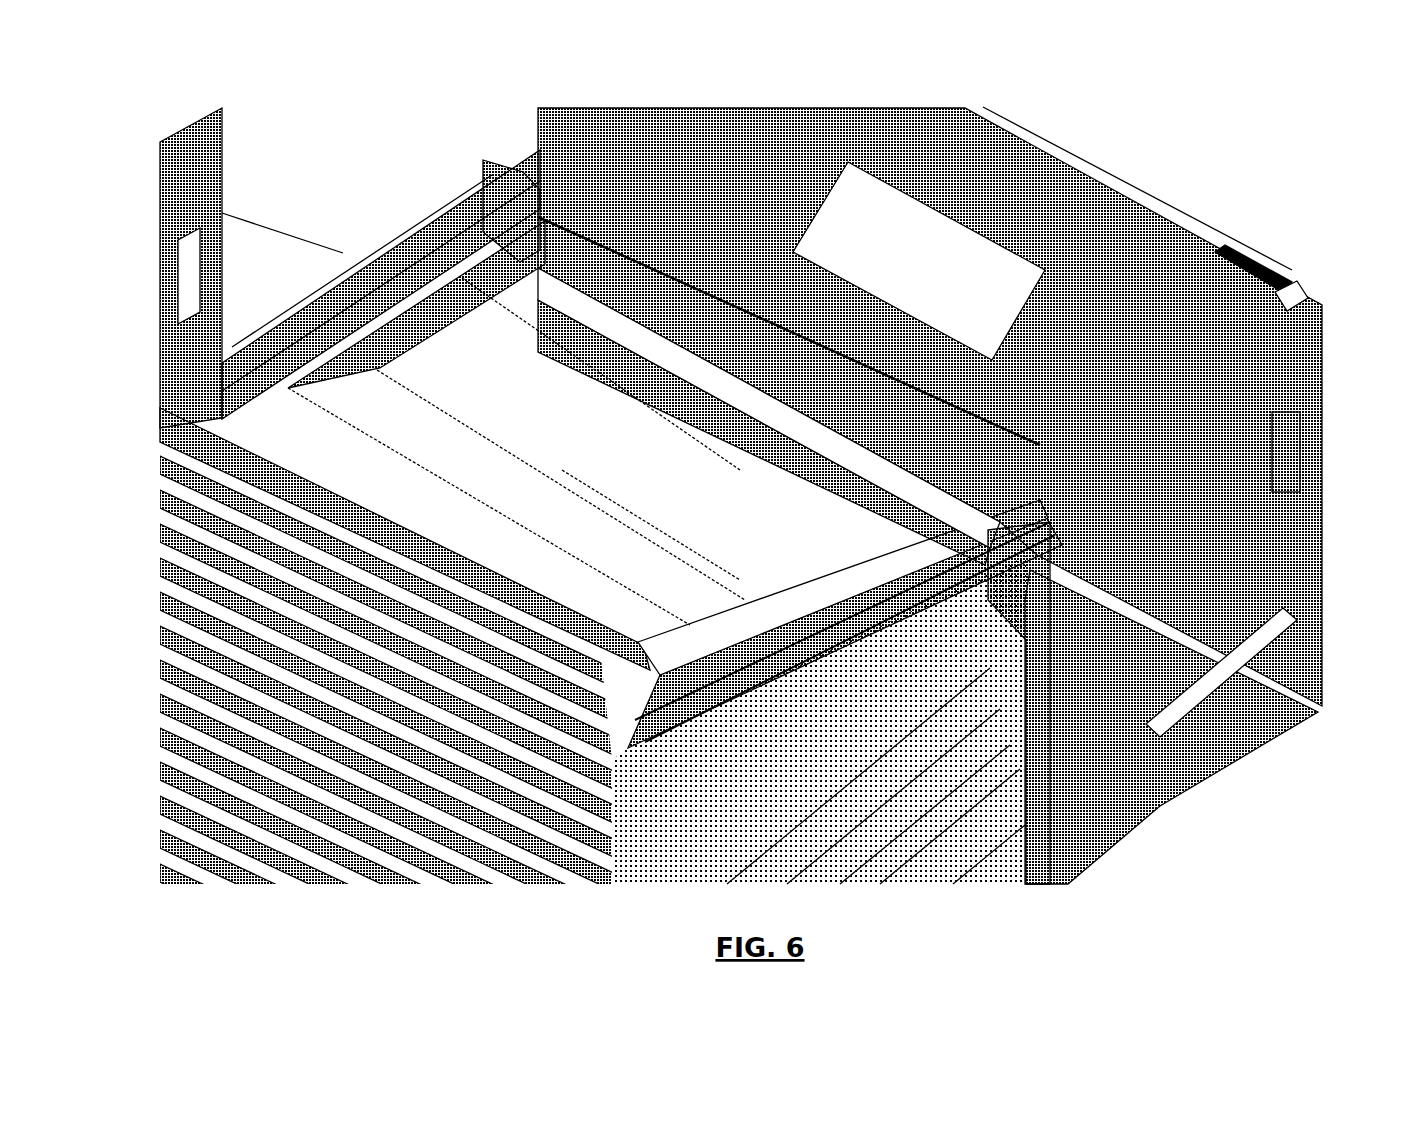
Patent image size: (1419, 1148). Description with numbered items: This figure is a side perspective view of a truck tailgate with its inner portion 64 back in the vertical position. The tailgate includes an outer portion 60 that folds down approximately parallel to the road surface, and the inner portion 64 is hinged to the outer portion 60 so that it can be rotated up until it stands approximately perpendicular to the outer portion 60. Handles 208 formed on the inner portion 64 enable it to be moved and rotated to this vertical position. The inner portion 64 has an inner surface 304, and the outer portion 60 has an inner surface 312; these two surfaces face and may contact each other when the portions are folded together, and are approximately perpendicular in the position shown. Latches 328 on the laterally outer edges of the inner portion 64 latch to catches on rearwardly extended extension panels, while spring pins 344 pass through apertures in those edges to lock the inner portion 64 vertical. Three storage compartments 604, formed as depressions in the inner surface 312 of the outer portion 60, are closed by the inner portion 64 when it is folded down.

The outer portion 60 is at (1160, 770).
The inner portion 64 is at (1087, 186).
The handles 208 is at (1240, 275).
The inner surface 304 is at (925, 175).
The inner surface 312 is at (862, 444).
The latches 328 is at (1298, 466).
The spring pins 344 is at (1302, 624).
The storage compartments 604 is at (730, 386).